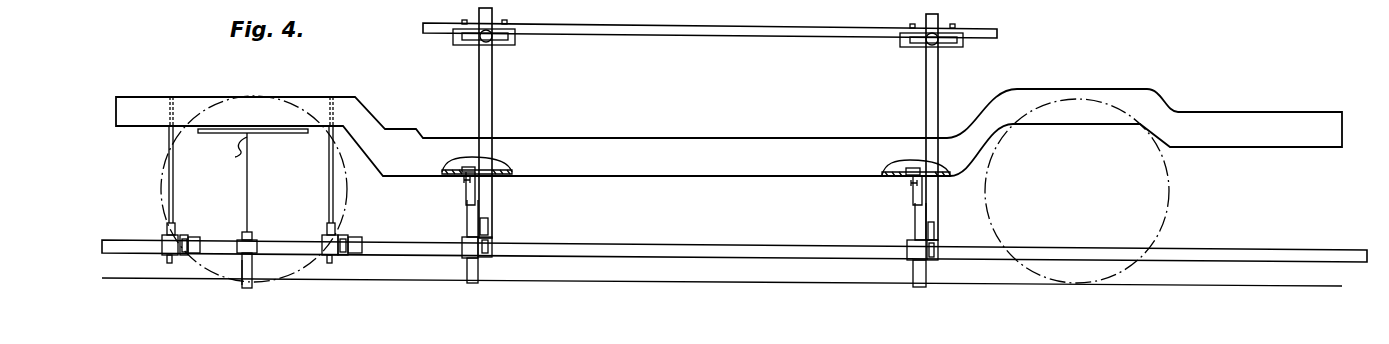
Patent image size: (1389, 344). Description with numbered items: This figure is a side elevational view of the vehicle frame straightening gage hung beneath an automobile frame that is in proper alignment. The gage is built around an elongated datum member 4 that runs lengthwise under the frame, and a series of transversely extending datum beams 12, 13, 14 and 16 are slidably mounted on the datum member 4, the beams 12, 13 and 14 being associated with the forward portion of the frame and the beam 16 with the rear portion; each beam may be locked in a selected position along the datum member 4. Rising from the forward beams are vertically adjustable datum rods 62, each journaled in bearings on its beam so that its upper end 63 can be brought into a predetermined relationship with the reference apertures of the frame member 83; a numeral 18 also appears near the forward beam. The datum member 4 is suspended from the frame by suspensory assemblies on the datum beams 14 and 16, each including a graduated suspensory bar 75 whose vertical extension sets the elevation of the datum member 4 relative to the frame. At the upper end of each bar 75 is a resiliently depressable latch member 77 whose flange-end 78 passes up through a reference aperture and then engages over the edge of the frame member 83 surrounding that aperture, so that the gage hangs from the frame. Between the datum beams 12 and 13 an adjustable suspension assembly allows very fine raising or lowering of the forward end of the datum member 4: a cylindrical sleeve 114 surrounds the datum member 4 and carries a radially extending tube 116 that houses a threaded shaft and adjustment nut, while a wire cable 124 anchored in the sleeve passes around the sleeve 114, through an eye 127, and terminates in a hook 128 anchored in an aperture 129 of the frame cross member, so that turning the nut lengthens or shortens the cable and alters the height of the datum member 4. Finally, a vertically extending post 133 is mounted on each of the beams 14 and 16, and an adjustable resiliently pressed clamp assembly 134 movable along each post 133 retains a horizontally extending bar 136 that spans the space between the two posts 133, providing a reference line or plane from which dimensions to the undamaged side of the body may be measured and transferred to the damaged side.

The datum member 4 is at (723, 247).
The datum beam 12 is at (185, 233).
The datum beam 13 is at (347, 233).
The datum beam 14 is at (495, 239).
The datum beam 16 is at (938, 252).
The stop 18 is at (159, 234).
The datum rod 62 is at (168, 170).
The upper end of datum rod 63 is at (172, 97).
The suspensory bar 75 is at (468, 223).
The latch member 77 is at (468, 195).
The flange-end 78 is at (470, 157).
The frame member 83 is at (134, 97).
The cylindrical sleeve 114 is at (256, 254).
The tube 116 is at (245, 273).
The wire cable 124 is at (248, 190).
The eye 127 is at (252, 237).
The hook 128 is at (238, 157).
The aperture 129 is at (248, 137).
The post 133 is at (491, 103).
The clamp assembly 134 is at (447, 40).
The horizontally extending bar 136 is at (712, 36).